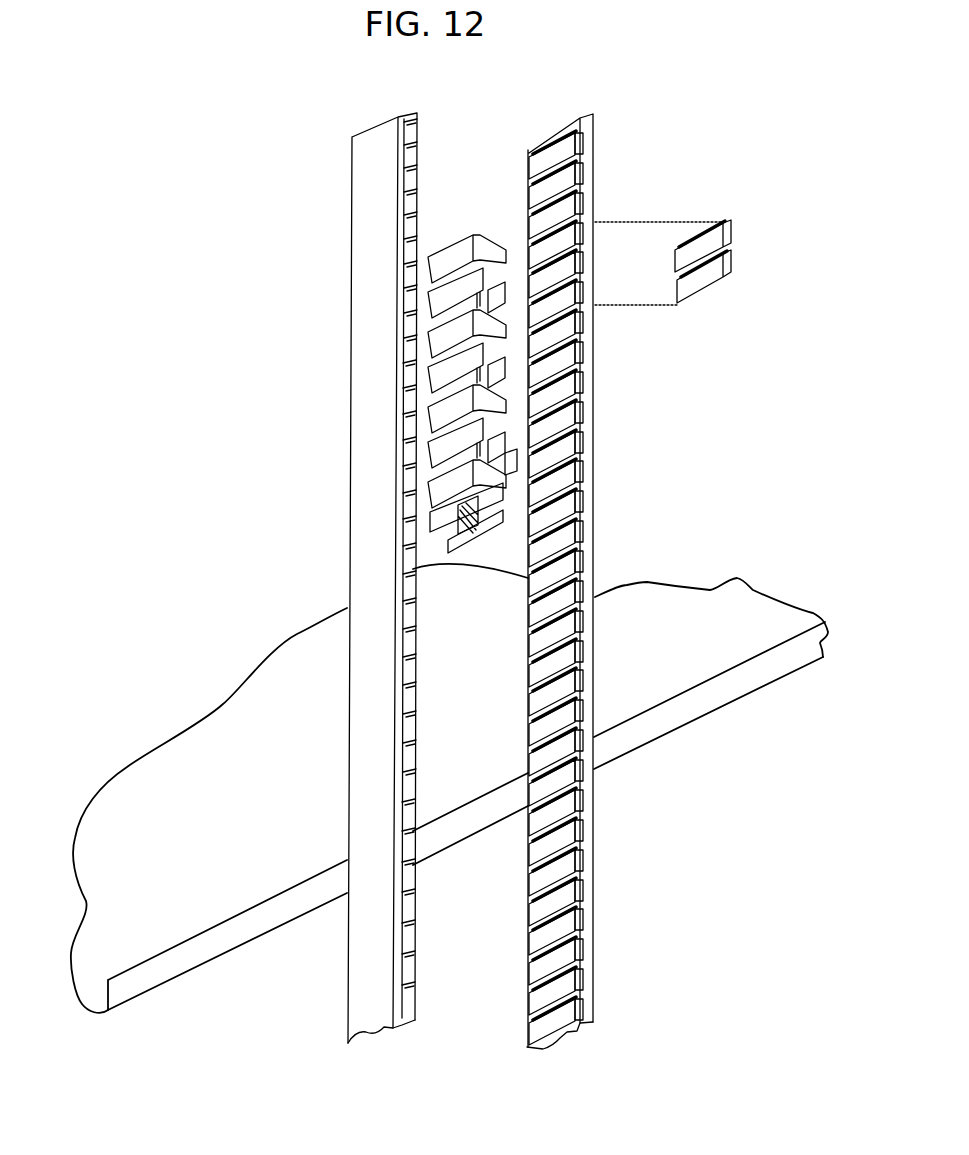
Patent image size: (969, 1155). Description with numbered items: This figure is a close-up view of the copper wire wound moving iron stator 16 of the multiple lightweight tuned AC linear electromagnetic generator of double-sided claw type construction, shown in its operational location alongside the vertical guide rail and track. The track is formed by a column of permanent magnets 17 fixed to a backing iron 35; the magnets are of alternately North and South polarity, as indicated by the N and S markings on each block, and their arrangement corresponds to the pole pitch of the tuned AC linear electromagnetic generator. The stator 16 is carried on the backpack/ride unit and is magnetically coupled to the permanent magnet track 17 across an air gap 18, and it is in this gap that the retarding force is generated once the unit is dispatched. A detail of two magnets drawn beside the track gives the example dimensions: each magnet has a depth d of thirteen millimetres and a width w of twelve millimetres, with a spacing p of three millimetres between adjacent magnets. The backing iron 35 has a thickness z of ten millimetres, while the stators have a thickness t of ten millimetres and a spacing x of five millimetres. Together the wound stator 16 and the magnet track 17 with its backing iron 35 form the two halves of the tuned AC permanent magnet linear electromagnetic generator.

The moving copper wire wound iron stator 16 is at (475, 533).
The permanent magnets 17 is at (538, 150).
The air gap 18 is at (420, 523).
The backing iron 35 is at (580, 1029).
The stator spacing x is at (428, 430).
The stator thickness t is at (512, 460).
The backing iron thickness z is at (588, 966).
The magnet width w is at (735, 222).
The magnet spacing p is at (735, 249).
The magnet depth d is at (722, 285).